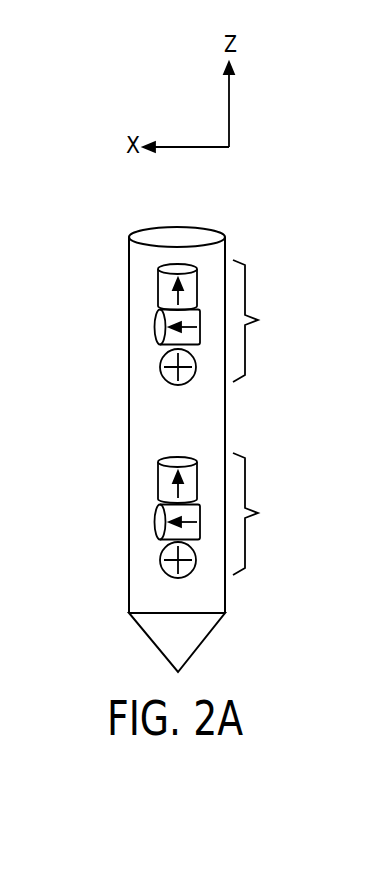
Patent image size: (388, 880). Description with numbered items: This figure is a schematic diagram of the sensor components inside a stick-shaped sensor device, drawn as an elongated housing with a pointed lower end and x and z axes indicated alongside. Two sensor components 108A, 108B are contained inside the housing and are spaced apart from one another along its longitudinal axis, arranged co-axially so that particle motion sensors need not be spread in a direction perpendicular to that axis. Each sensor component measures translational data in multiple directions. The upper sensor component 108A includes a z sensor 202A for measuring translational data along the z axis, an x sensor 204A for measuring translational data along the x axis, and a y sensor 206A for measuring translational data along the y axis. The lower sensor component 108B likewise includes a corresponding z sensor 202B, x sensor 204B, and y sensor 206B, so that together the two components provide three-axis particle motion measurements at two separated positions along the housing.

The sensor component 108A is at (271, 321).
The sensor component 108B is at (271, 514).
The z sensor 202A is at (158, 284).
The z sensor 202B is at (158, 477).
The x sensor 204A is at (155, 325).
The x sensor 204B is at (155, 519).
The y sensor 206A is at (161, 362).
The y sensor 206B is at (161, 555).